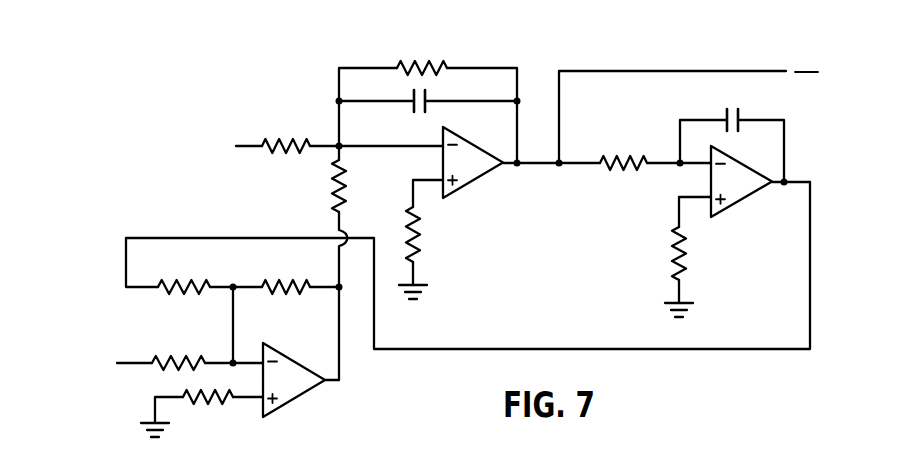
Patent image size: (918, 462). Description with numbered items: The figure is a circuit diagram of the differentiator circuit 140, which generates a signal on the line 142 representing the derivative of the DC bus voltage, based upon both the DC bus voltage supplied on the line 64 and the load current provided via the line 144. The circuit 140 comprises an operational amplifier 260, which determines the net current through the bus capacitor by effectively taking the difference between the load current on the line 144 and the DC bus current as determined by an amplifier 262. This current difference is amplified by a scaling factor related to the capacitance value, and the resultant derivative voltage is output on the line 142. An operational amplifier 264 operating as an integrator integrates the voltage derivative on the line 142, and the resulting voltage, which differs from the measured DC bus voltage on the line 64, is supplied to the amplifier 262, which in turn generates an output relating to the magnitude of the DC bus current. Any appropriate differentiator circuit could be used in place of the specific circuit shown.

The differentiator circuit 140 is at (416, 229).
The line 142 is at (680, 70).
The line 144 is at (238, 147).
The line 64 is at (133, 362).
The operational amplifier 260 is at (473, 185).
The amplifier 262 is at (298, 398).
The operational amplifier 264 is at (745, 200).